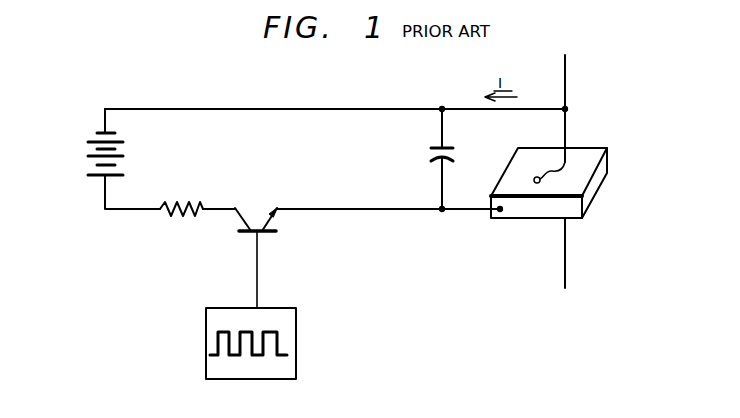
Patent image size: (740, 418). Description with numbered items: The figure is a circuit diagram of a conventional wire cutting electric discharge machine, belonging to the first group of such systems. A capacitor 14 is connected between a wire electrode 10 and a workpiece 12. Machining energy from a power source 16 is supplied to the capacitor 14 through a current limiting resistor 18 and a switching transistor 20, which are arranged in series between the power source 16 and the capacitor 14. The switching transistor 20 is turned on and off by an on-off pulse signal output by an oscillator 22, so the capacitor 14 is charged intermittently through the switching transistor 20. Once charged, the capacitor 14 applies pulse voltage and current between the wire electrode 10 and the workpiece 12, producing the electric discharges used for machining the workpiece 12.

The wire electrode 10 is at (566, 88).
The workpiece 12 is at (608, 162).
The capacitor 14 is at (445, 147).
The power source 16 is at (88, 152).
The current limiting resistor 18 is at (187, 220).
The switching transistor 20 is at (269, 214).
The oscillator 22 is at (297, 313).